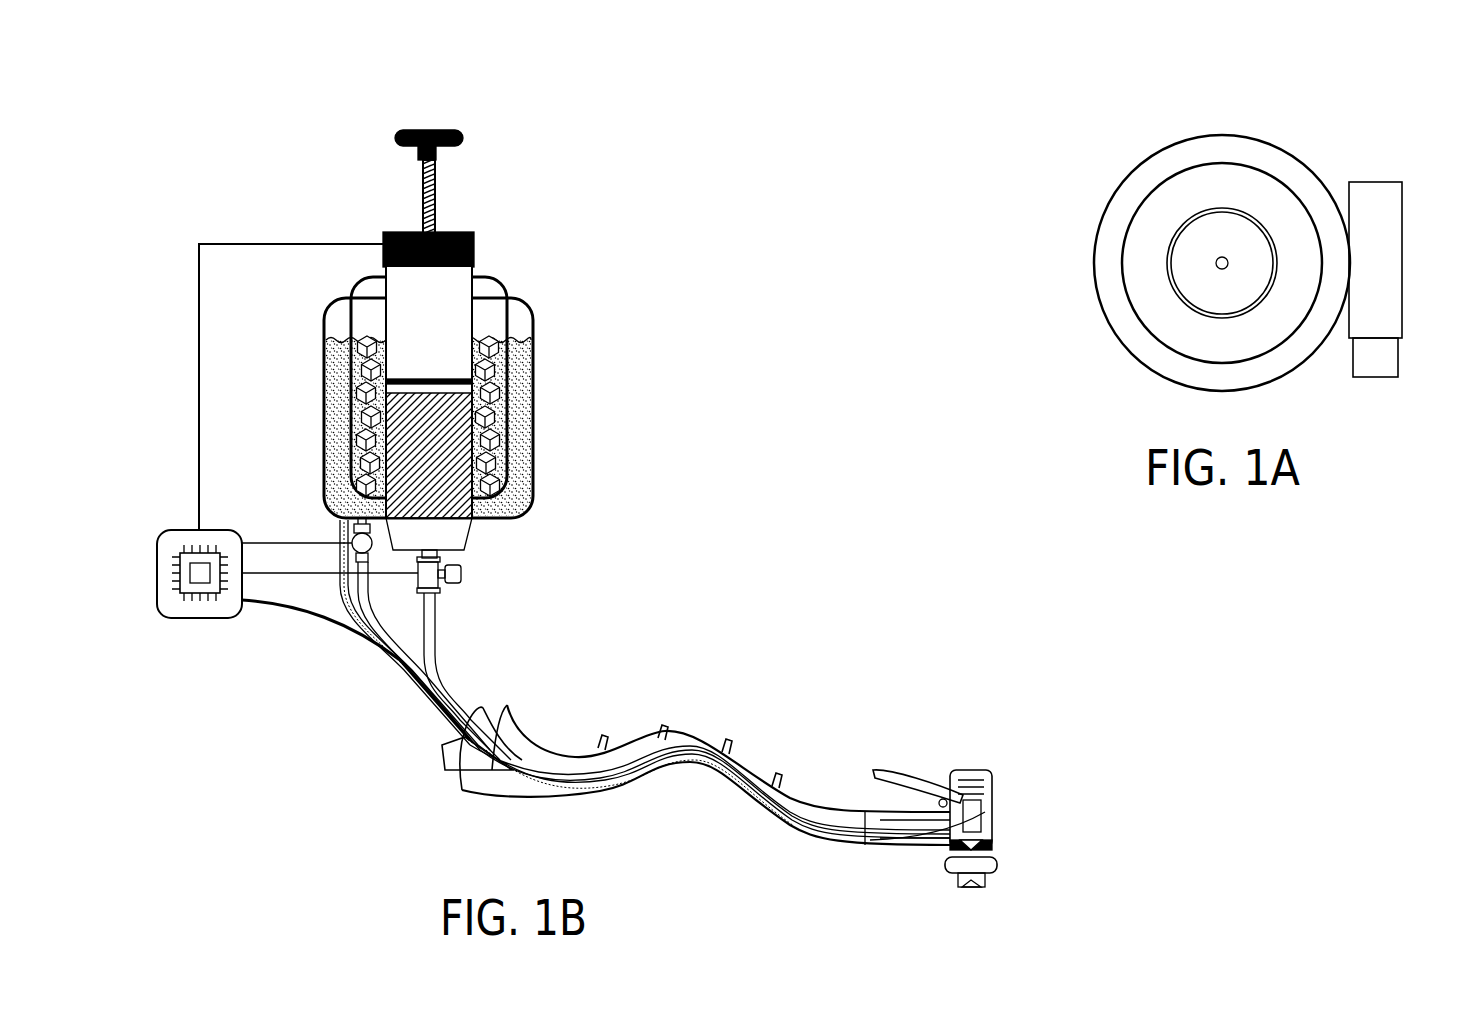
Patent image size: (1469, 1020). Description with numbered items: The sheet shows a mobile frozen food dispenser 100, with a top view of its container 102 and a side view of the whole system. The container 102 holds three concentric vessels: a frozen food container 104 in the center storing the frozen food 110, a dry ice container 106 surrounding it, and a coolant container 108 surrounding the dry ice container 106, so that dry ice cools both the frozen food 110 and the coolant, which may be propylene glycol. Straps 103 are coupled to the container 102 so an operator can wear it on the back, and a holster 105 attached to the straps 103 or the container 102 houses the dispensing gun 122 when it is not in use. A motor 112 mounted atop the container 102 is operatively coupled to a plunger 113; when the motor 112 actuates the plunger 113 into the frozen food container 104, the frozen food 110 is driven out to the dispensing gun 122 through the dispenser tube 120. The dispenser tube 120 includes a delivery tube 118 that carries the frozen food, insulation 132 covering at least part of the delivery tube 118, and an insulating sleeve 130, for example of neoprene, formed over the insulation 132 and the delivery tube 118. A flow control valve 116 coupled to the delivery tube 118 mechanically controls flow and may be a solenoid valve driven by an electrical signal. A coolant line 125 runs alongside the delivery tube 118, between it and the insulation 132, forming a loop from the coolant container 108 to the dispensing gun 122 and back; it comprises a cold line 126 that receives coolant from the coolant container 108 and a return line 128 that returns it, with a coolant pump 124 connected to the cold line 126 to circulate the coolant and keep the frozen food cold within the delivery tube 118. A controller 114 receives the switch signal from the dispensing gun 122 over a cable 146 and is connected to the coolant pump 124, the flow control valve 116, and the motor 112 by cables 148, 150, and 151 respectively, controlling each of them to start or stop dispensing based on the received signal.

In FIG. 1B, the mobile frozen food dispenser 100 is at (220, 130).
In FIG. 1A, the mobile frozen food dispenser 100 is at (1083, 102).
In FIG. 1B, the container 102 is at (522, 240).
In FIG. 1A, the container 102 is at (1283, 126).
In FIG. 1A, the straps 103 is at (1387, 182).
In FIG. 1B, the frozen food container 104 is at (408, 400).
In FIG. 1A, the frozen food container 104 is at (1193, 262).
In FIG. 1A, the holster 105 is at (1377, 378).
In FIG. 1B, the dry ice container 106 is at (362, 448).
In FIG. 1A, the dry ice container 106 is at (1160, 220).
In FIG. 1B, the coolant container 108 is at (325, 500).
In FIG. 1A, the coolant container 108 is at (1137, 177).
In FIG. 1B, the frozen food 110 is at (449, 488).
In FIG. 1B, the motor 112 is at (383, 228).
In FIG. 1B, the plunger 113 is at (449, 378).
In FIG. 1B, the controller 114 is at (172, 620).
In FIG. 1B, the flow control valve 116 is at (473, 574).
In FIG. 1B, the delivery tube 118 is at (445, 619).
In FIG. 1B, the dispenser tube 120 is at (608, 724).
In FIG. 1B, the dispensing gun 122 is at (917, 758).
In FIG. 1B, the coolant pump 124 is at (350, 562).
In FIG. 1B, the coolant line 125 is at (333, 690).
In FIG. 1B, the cold line 126 is at (406, 670).
In FIG. 1B, the return line 128 is at (390, 660).
In FIG. 1B, the insulating sleeve 130 is at (522, 806).
In FIG. 1B, the insulation 132 is at (447, 777).
In FIG. 1B, the cable 146 is at (312, 608).
In FIG. 1B, the cable 148 is at (318, 543).
In FIG. 1B, the cable 150 is at (258, 576).
In FIG. 1B, the cable 151 is at (215, 244).